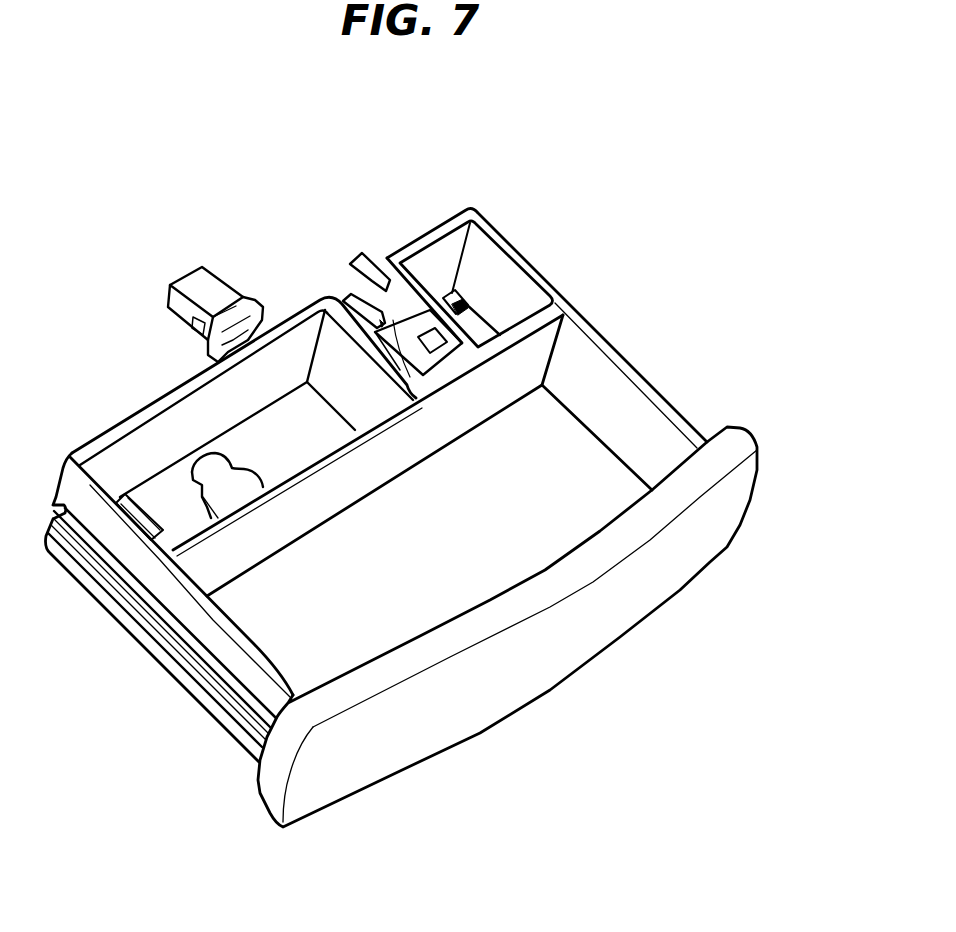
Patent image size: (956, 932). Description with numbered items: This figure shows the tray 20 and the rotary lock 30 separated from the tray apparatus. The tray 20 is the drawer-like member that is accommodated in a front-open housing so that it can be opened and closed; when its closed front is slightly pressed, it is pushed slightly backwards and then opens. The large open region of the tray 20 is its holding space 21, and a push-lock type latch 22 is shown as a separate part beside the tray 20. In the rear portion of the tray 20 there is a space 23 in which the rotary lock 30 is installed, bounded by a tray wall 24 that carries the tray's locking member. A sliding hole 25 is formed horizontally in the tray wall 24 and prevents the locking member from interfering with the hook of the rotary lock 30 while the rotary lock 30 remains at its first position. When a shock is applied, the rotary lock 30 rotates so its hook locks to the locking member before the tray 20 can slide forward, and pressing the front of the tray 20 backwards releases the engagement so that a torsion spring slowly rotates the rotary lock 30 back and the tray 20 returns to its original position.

The tray 20 is at (617, 673).
The holding space 21 is at (560, 457).
The push-lock type latch 22 is at (197, 283).
The space 23 is at (340, 244).
The tray wall 24 is at (388, 270).
The sliding hole 25 is at (350, 290).
The rotary lock 30 is at (455, 314).